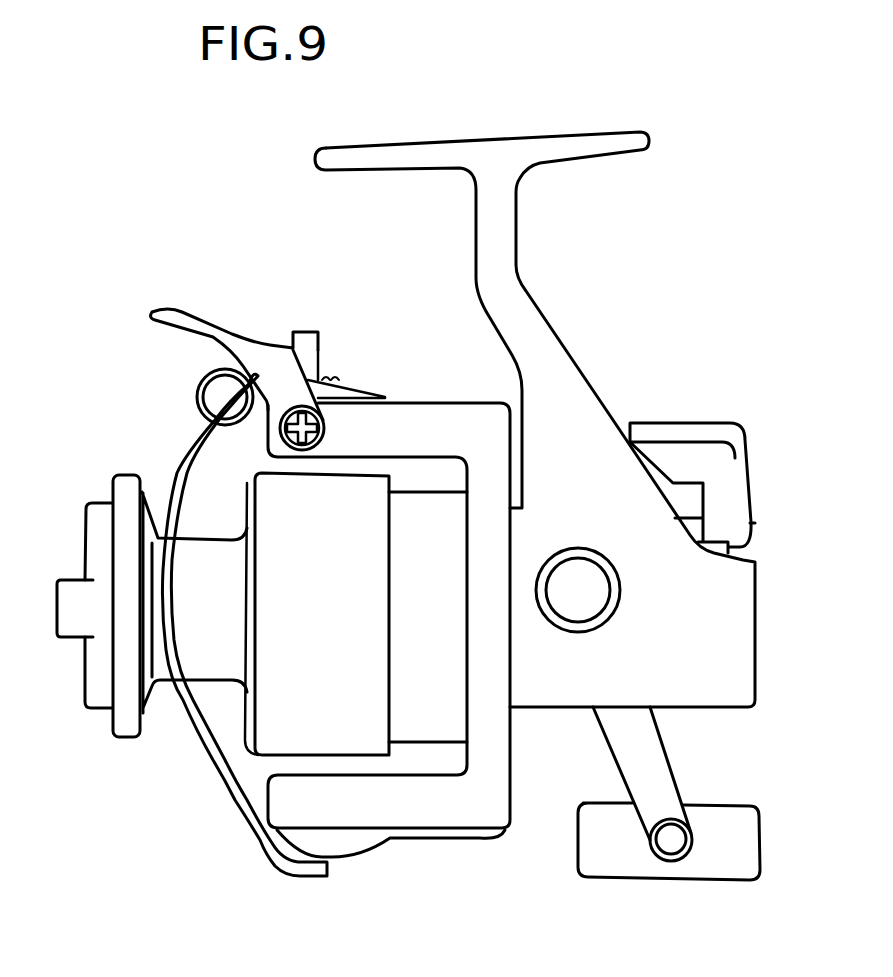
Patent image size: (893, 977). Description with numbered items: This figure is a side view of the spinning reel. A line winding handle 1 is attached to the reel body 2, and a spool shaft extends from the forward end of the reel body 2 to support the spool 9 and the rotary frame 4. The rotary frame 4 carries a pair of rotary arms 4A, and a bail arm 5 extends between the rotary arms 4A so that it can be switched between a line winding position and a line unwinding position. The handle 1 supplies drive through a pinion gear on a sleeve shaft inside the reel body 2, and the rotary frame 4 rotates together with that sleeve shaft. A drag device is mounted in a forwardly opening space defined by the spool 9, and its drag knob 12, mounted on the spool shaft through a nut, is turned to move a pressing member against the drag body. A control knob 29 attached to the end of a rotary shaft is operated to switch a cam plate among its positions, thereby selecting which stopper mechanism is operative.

The line winding handle 1 is at (677, 778).
The reel body 2 is at (602, 468).
The rotary frame 4 is at (448, 403).
The rotary arms 4A is at (400, 405).
The bail arm 5 is at (222, 803).
The spool 9 is at (217, 538).
The drag knob 12 is at (74, 577).
The control knob 29 is at (709, 423).